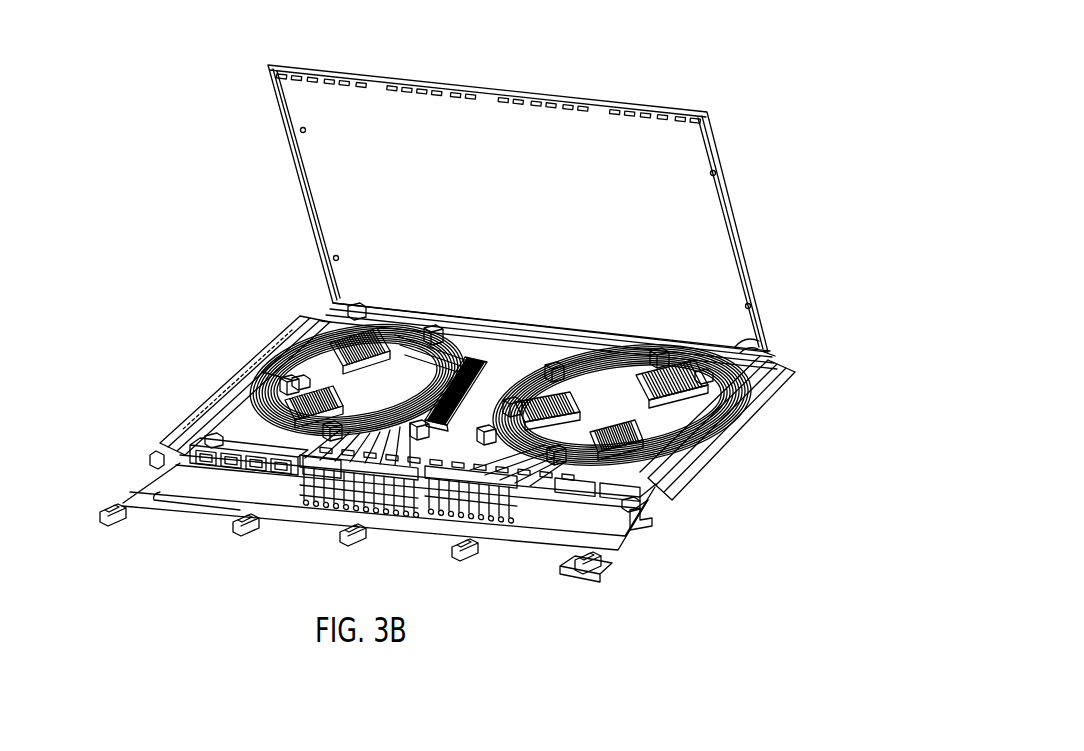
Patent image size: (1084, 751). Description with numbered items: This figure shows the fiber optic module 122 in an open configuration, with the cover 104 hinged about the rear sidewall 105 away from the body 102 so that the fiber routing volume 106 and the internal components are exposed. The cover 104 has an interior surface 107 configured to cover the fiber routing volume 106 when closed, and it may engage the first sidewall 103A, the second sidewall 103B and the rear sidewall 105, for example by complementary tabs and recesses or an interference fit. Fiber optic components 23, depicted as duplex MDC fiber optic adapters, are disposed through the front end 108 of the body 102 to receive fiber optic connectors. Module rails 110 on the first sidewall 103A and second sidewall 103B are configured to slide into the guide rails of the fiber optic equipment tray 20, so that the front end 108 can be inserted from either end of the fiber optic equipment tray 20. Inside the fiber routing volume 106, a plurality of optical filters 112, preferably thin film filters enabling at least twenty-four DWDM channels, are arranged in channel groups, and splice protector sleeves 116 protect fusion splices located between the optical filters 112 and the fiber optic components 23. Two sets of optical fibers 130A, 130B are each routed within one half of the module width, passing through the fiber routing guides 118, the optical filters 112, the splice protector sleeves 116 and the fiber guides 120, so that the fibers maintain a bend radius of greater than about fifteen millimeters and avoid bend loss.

The fiber optic equipment tray 20 is at (712, 532).
The fiber optic components 23 is at (218, 470).
The body 102 is at (488, 345).
The first sidewall 103A is at (700, 425).
The second sidewall 103B is at (270, 352).
The cover 104 is at (670, 140).
The rear sidewall 105 is at (745, 346).
The fiber routing volume 106 is at (300, 385).
The interior surface 107 is at (343, 115).
The front end 108 is at (310, 530).
The module rails 110 is at (690, 396).
The optical filters 112 is at (352, 303).
The splice protector sleeves 116 is at (460, 352).
The fiber routing guides 118 is at (430, 332).
The fiber guides 120 is at (505, 347).
The fiber optic module 122 is at (211, 99).
The first set of optical fibers 130A is at (384, 345).
The second set of optical fibers 130B is at (607, 352).